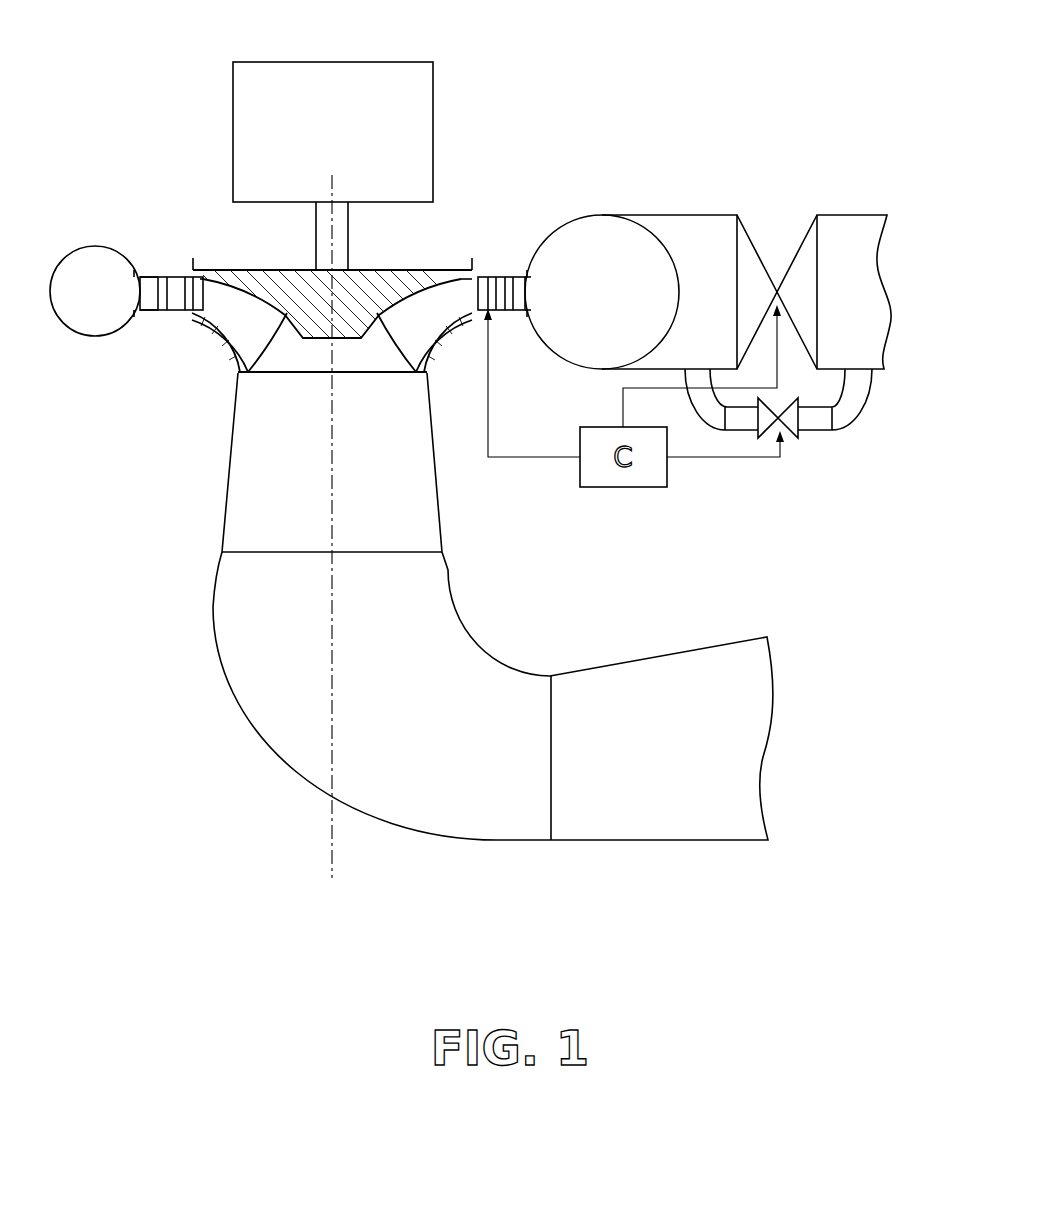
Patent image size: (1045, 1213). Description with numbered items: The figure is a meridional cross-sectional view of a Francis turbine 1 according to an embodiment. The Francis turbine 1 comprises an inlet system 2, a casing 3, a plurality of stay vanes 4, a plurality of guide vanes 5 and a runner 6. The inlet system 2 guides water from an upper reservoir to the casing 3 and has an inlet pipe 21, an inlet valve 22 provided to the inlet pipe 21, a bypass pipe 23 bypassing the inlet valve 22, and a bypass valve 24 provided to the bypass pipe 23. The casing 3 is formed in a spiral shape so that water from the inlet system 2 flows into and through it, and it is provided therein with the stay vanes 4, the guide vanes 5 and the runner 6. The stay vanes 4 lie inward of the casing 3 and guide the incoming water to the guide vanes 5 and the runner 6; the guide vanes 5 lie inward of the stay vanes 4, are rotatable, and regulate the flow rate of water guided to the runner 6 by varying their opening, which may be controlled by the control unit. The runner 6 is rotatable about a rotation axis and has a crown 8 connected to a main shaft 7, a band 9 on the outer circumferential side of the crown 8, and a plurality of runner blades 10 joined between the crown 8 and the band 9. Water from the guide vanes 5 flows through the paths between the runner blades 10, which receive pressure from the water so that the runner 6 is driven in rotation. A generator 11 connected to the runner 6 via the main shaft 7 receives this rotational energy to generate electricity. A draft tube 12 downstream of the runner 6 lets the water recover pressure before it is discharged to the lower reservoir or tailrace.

The Francis turbine 1 is at (886, 95).
The inlet system 2 is at (826, 253).
The casing 3 is at (575, 213).
The stay vanes 4 is at (518, 305).
The guide vanes 5 is at (488, 283).
The runner 6 is at (230, 266).
The main shaft 7 is at (316, 230).
The crown 8 is at (408, 270).
The band 9 is at (436, 340).
The runner blades 10 is at (265, 333).
The generator 11 is at (233, 122).
The draft tube 12 is at (437, 503).
The inlet pipe 21 is at (833, 213).
The inlet valve 22 is at (803, 258).
The bypass pipe 23 is at (862, 418).
The bypass valve 24 is at (788, 420).